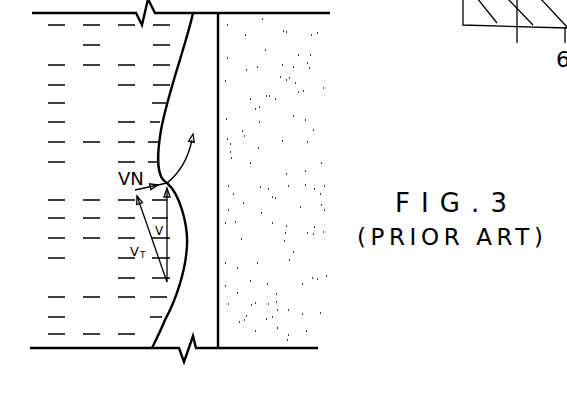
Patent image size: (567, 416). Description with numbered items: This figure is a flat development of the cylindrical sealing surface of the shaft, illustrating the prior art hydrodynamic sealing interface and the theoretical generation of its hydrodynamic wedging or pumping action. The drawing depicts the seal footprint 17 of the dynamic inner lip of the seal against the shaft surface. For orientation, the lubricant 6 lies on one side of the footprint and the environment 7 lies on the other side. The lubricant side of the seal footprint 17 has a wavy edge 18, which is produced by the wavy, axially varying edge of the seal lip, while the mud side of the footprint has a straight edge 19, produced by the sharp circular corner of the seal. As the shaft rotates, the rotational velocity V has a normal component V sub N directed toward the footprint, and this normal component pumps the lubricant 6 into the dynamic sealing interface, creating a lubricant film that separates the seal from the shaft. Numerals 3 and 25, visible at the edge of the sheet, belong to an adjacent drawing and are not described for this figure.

The lubricant 6 is at (109, 179).
The environment 7 is at (276, 179).
The seal footprint 17 is at (172, 329).
The wavy edge 18 is at (160, 112).
The straight edge 19 is at (221, 98).
The adjacent figure element 3 is at (500, 7).
The adjacent figure element 25 is at (519, 36).